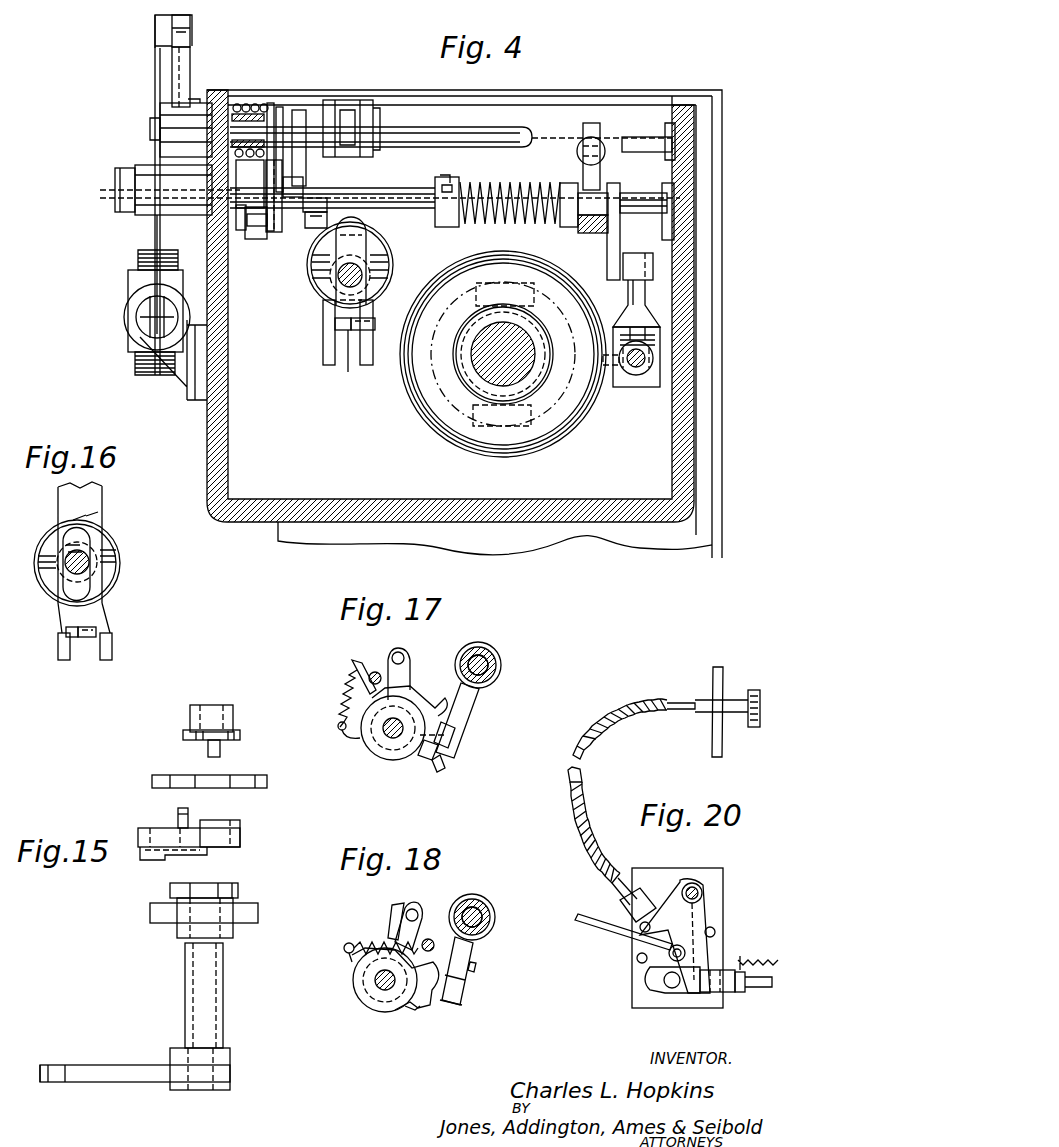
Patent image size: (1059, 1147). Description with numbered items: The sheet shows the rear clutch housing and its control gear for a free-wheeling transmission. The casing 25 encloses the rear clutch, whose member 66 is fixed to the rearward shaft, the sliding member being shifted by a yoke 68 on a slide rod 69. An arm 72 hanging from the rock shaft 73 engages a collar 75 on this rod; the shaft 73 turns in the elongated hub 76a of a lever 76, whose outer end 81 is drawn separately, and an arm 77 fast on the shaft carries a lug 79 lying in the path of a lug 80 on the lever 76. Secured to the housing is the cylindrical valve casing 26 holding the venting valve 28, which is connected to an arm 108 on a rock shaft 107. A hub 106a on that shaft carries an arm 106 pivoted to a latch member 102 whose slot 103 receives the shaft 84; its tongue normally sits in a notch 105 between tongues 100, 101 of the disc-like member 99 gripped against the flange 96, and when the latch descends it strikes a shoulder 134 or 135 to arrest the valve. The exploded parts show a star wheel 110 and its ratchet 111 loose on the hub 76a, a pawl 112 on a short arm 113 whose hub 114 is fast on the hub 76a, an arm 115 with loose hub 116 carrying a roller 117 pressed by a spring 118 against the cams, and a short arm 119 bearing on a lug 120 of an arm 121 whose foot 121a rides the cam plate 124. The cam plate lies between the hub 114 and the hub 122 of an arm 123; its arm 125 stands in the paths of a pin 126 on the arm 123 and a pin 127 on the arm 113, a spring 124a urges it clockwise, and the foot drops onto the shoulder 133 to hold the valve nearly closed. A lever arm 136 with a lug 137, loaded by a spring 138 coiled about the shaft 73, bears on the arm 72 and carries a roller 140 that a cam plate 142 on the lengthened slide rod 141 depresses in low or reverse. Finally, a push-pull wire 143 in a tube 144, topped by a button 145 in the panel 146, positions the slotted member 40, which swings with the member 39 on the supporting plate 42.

In FIG. 4, the casing 25 is at (218, 440).
In FIG. 4, the cylindrical valve casing 26 is at (124, 310).
In FIG. 4, the venting valve 28 is at (140, 292).
In FIG. 20, the swinging member 39 is at (690, 913).
In FIG. 20, the slotted member 40 is at (650, 970).
In FIG. 20, the supporting plate 42 is at (666, 878).
In FIG. 4, the clutch member 66 is at (432, 415).
In FIG. 4, the yoke 68 is at (502, 426).
In FIG. 4, the slide rod 69 is at (635, 372).
In FIG. 4, the arm 72 is at (640, 300).
In FIG. 4, the rock shaft 73 is at (118, 190).
In FIG. 17, the rock shaft 73 is at (388, 738).
In FIG. 18, the rock shaft 73 is at (375, 988).
In FIG. 4, the collar 75 is at (652, 355).
In FIG. 4, the lever 76 is at (190, 72).
In FIG. 15, the lever 76 is at (133, 1080).
In FIG. 4, the elongated hub 76a is at (282, 228).
In FIG. 15, the elongated hub 76a is at (192, 992).
In FIG. 4, the arm 77 is at (155, 72).
In FIG. 4, the lug 79 is at (158, 38).
In FIG. 4, the lug 80 is at (190, 32).
In FIG. 15, the lever end 81 is at (60, 1078).
In FIG. 4, the shaft 84 is at (340, 282).
In FIG. 16, the shaft 84 is at (90, 561).
In FIG. 4, the flange 96 is at (380, 268).
In FIG. 16, the flange 96 is at (50, 585).
In FIG. 4, the flat disc-like member 99 is at (335, 292).
In FIG. 16, the flat disc-like member 99 is at (100, 545).
In FIG. 4, the tongue 100 is at (327, 353).
In FIG. 16, the tongue 100 is at (62, 652).
In FIG. 4, the tongue 101 is at (366, 365).
In FIG. 16, the tongue 101 is at (112, 654).
In FIG. 4, the latch member 102 is at (350, 178).
In FIG. 16, the latch member 102 is at (85, 505).
In FIG. 4, the slot 103 is at (360, 250).
In FIG. 16, the slot 103 is at (90, 580).
In FIG. 4, the notch 105 is at (348, 360).
In FIG. 4, the arm 106 is at (370, 127).
In FIG. 4, the hub 106a is at (345, 108).
In FIG. 4, the rock shaft 107 is at (150, 126).
In FIG. 17, the rock shaft 107 is at (500, 655).
In FIG. 18, the rock shaft 107 is at (492, 905).
In FIG. 4, the arm 108 is at (155, 234).
In FIG. 4, the star wheel 110 is at (258, 240).
In FIG. 15, the star wheel 110 is at (160, 920).
In FIG. 4, the ratchet 111 is at (270, 226).
In FIG. 15, the ratchet 111 is at (183, 888).
In FIG. 15, the pawl 112 is at (207, 856).
In FIG. 15, the short arm 113 is at (163, 832).
In FIG. 15, the hub 114 is at (270, 818).
In FIG. 4, the arm 115 is at (270, 103).
In FIG. 4, the hub 116 is at (280, 107).
In FIG. 17, the hub 116 is at (488, 668).
In FIG. 18, the hub 116 is at (485, 916).
In FIG. 4, the roller 117 is at (240, 232).
In FIG. 4, the spring 118 is at (245, 104).
In FIG. 4, the short arm 119 is at (300, 110).
In FIG. 17, the short arm 119 is at (470, 700).
In FIG. 18, the short arm 119 is at (465, 940).
In FIG. 4, the lug 120 is at (300, 180).
In FIG. 17, the lug 120 is at (455, 728).
In FIG. 18, the lug 120 is at (476, 964).
In FIG. 4, the arm 121 is at (312, 200).
In FIG. 17, the arm 121 is at (450, 742).
In FIG. 18, the arm 121 is at (462, 978).
In FIG. 4, the foot 121a is at (325, 218).
In FIG. 17, the foot 121a is at (445, 762).
In FIG. 18, the foot 121a is at (462, 1004).
In FIG. 15, the hub 122 is at (200, 715).
In FIG. 15, the arm 123 is at (220, 744).
In FIG. 17, the arm 123 is at (402, 670).
In FIG. 18, the arm 123 is at (416, 910).
In FIG. 15, the cam plate 124 is at (186, 775).
In FIG. 17, the cam plate 124 is at (410, 755).
In FIG. 18, the cam plate 124 is at (380, 1000).
In FIG. 17, the spring 124a is at (345, 705).
In FIG. 18, the spring 124a is at (368, 932).
In FIG. 17, the arm 125 is at (352, 662).
In FIG. 18, the arm 125 is at (392, 905).
In FIG. 15, the pin 126 is at (220, 756).
In FIG. 17, the pin 126 is at (392, 655).
In FIG. 18, the pin 126 is at (410, 908).
In FIG. 15, the pin 127 is at (188, 812).
In FIG. 17, the pin 127 is at (372, 672).
In FIG. 18, the pin 127 is at (430, 940).
In FIG. 18, the shoulder 133 is at (415, 1010).
In FIG. 4, the shoulder 134 is at (335, 335).
In FIG. 16, the shoulder 134 is at (66, 630).
In FIG. 4, the shoulder 135 is at (366, 340).
In FIG. 16, the shoulder 135 is at (100, 638).
In FIG. 4, the lever arm 136 is at (612, 260).
In FIG. 4, the lug 137 is at (653, 265).
In FIG. 4, the spring 138 is at (525, 185).
In FIG. 4, the roller 140 is at (580, 232).
In FIG. 4, the slide rod 141 is at (600, 142).
In FIG. 4, the cam plate 142 is at (591, 123).
In FIG. 20, the push-pull wire 143 is at (584, 754).
In FIG. 20, the tube 144 is at (618, 712).
In FIG. 20, the button 145 is at (758, 692).
In FIG. 20, the panel 146 is at (713, 680).